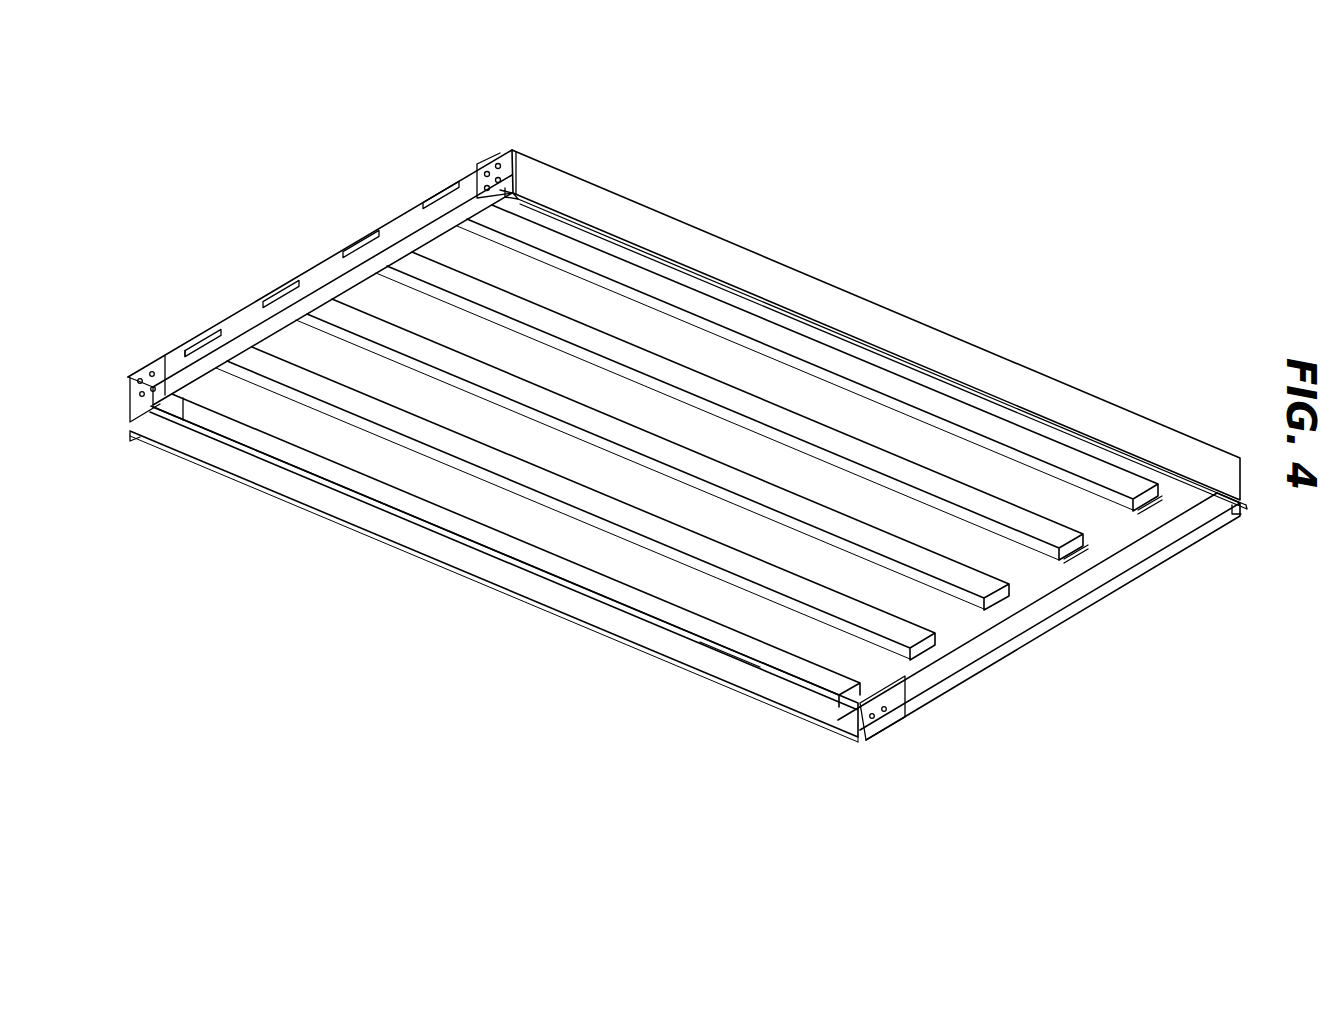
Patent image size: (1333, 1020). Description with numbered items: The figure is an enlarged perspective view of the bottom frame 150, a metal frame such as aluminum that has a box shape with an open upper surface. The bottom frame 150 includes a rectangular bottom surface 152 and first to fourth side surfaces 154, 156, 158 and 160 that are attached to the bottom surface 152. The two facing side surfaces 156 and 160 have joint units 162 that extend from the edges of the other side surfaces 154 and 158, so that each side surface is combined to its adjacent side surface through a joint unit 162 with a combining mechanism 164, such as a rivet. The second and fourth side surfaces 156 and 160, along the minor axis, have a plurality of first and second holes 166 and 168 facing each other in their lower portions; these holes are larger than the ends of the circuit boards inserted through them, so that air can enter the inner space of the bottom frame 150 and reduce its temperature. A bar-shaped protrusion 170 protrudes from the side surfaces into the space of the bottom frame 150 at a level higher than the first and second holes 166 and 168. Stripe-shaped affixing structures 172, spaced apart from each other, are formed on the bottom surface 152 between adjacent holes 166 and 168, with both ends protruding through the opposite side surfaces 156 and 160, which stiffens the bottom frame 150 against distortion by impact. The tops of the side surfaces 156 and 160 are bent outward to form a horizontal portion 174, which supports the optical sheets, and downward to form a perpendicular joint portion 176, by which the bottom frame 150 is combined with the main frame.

The bottom frame 150 is at (322, 602).
The bottom surface 152 is at (872, 735).
The first side surface 154 is at (1045, 385).
The second side surface 156 is at (1050, 608).
The third side surface 158 is at (601, 618).
The fourth side surface 160 is at (320, 272).
The joint unit 162 is at (492, 165).
The combining mechanism 164 is at (513, 152).
The first holes 166 is at (1066, 540).
The second holes 168 is at (436, 190).
The protrusion 170 is at (748, 662).
The affixing structures 172 is at (540, 540).
The horizontal portion 174 is at (187, 397).
The joint portion 176 is at (193, 374).